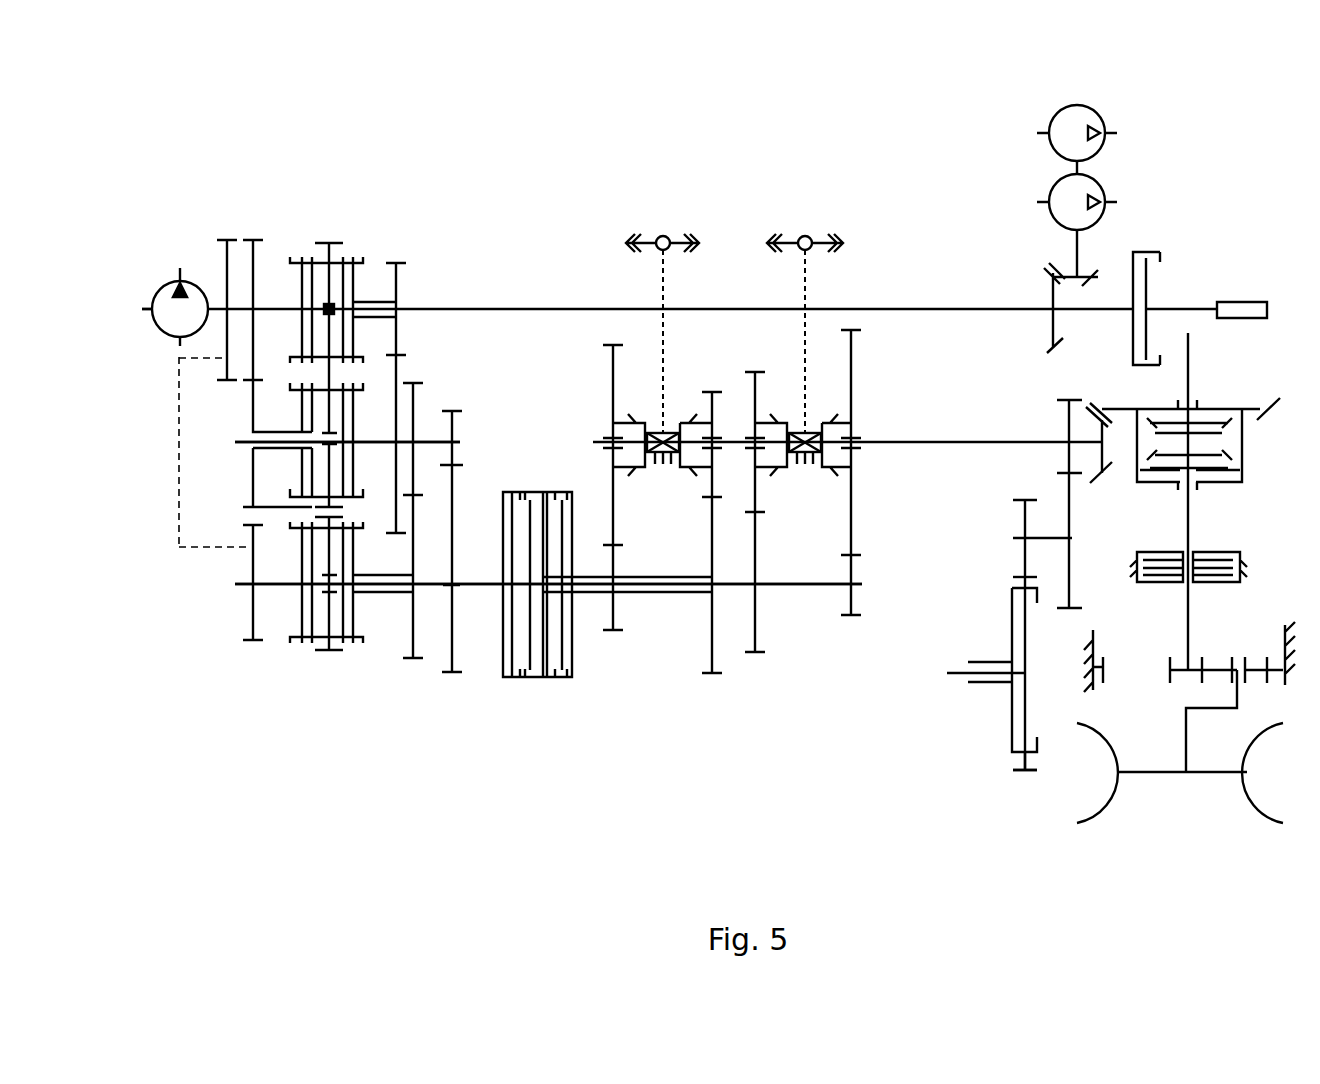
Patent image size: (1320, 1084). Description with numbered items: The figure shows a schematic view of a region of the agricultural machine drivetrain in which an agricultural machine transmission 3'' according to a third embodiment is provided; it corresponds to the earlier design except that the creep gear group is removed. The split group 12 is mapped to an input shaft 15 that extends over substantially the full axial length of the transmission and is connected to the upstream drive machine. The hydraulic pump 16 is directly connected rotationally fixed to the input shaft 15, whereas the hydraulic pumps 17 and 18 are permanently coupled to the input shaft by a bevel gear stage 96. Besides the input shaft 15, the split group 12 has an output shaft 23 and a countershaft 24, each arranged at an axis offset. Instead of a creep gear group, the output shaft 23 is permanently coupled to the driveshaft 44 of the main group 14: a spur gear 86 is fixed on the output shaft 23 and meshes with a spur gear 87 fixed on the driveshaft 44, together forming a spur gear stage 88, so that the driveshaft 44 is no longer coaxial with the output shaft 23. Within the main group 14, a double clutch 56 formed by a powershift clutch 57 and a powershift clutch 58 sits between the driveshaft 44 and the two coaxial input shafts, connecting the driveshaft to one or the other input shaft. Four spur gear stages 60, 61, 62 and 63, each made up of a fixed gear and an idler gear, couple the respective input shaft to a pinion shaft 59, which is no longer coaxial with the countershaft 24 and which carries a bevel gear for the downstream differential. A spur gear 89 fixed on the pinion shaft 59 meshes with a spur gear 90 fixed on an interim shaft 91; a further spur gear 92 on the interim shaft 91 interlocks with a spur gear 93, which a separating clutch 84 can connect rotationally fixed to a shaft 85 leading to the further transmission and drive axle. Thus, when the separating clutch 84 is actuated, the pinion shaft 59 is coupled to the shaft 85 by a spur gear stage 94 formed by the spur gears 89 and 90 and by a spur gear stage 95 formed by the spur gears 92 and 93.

The agricultural machine transmission 3'' is at (200, 85).
The split group 12 is at (323, 198).
The main group 14 is at (715, 195).
The input shaft 15 is at (152, 300).
The hydraulic pump 16 is at (180, 280).
The hydraulic pump 17 is at (1049, 192).
The hydraulic pump 18 is at (1076, 104).
The output shaft 23 is at (430, 440).
The countershaft 24 is at (243, 585).
The driveshaft 44 is at (482, 588).
The double clutch 56 is at (607, 439).
The powershift clutch 57 is at (512, 490).
The powershift clutch 58 is at (553, 490).
The pinion shaft 59 is at (915, 442).
The spur gear stage 60 is at (862, 558).
The spur gear stage 61 is at (619, 552).
The spur gear stage 62 is at (758, 518).
The spur gear stage 63 is at (705, 500).
The separating clutch 84 is at (1018, 692).
The shaft 85 is at (955, 676).
The spur gear 86 is at (463, 410).
The spur gear 87 is at (450, 650).
The spur gear stage 88 is at (448, 470).
The spur gear 89 is at (1100, 422).
The spur gear 90 is at (1088, 484).
The interim shaft 91 is at (1040, 540).
The spur gear 92 is at (1018, 507).
The spur gear 93 is at (1022, 758).
The spur gear stage 94 is at (1080, 486).
The spur gear stage 95 is at (1015, 581).
The bevel gear stage 96 is at (1045, 292).